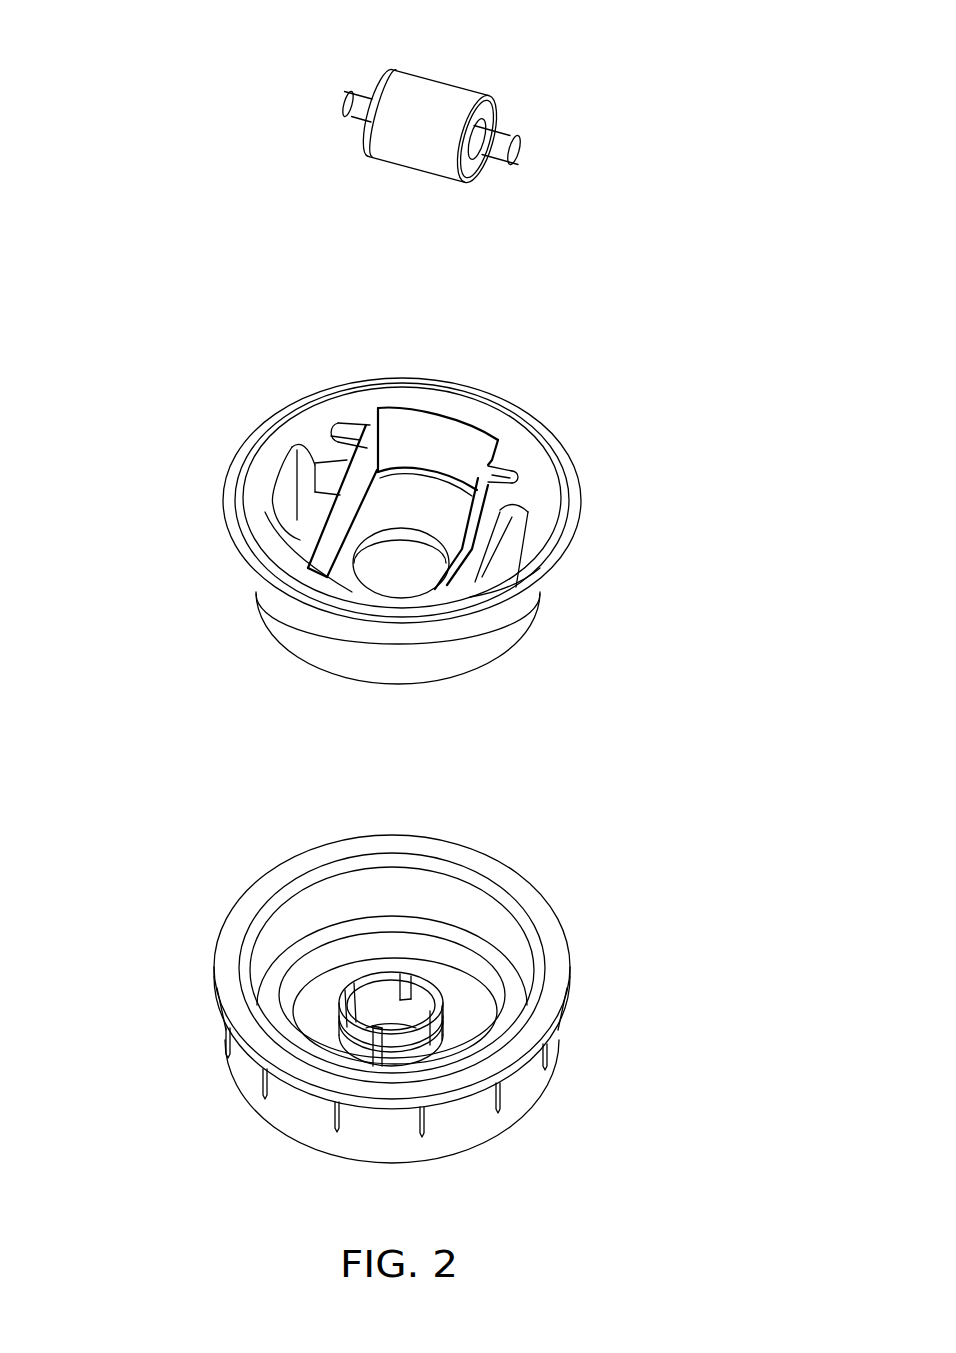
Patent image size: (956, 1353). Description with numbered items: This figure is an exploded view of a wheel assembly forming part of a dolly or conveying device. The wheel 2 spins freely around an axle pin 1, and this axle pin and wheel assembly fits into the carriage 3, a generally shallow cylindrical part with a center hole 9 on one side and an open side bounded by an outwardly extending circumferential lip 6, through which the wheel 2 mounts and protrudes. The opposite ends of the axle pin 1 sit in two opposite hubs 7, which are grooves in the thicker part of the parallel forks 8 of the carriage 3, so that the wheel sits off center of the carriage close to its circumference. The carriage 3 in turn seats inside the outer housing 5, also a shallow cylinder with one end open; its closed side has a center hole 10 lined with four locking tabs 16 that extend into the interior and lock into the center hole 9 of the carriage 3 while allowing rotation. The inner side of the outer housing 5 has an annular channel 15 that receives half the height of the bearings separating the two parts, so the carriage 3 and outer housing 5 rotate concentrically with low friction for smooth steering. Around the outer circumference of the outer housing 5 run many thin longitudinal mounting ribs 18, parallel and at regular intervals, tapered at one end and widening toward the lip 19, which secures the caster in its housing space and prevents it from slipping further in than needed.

The axle pin 1 is at (515, 137).
The wheel 2 is at (422, 115).
The carriage 3 is at (371, 493).
The outer housing 5 is at (343, 990).
The circumferential lip 6 is at (570, 500).
The hub 7 is at (357, 438).
The fork 8 is at (317, 520).
The center hole 9 is at (400, 577).
The center hole 10 is at (393, 1025).
The annular channel 15 is at (332, 951).
The locking tab 16 is at (437, 1003).
The mounting rib 18 is at (424, 1135).
The lip 19 is at (438, 852).